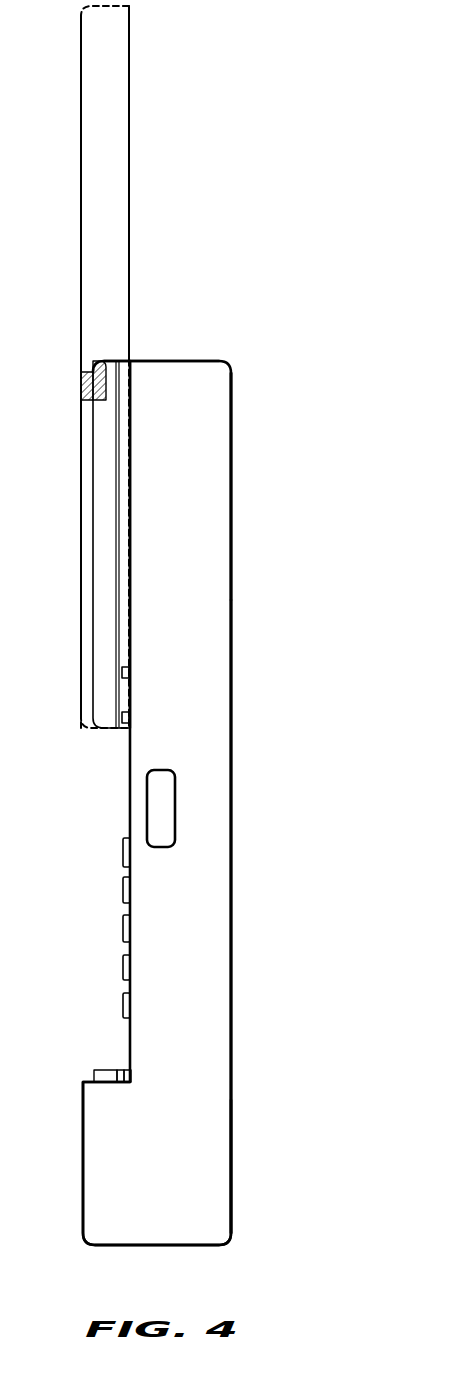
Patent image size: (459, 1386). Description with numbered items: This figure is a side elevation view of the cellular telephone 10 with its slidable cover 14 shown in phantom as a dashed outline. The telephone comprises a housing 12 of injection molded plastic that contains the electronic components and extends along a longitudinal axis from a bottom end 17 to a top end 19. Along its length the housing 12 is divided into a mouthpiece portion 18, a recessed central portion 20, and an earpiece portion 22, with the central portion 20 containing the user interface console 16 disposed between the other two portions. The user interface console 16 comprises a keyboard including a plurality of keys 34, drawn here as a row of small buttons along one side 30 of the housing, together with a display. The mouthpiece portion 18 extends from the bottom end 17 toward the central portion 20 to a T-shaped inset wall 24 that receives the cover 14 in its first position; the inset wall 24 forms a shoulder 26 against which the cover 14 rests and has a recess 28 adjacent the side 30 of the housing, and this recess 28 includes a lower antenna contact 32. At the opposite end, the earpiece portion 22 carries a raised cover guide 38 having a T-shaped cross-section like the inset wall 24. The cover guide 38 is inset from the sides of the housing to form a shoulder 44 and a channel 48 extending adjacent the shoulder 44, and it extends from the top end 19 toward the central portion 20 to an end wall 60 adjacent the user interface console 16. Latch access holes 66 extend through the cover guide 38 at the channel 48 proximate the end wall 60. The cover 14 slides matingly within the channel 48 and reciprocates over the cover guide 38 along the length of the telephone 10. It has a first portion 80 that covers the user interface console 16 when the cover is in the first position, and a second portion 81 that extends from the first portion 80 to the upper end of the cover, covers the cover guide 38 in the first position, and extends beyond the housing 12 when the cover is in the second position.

The cellular telephone 10 is at (186, 311).
The housing 12 is at (233, 573).
The slidable cover 14 is at (79, 161).
The user interface console 16 is at (123, 867).
The bottom end 17 is at (162, 1246).
The mouthpiece portion 18 is at (92, 1193).
The top end 19 is at (182, 360).
The recessed central portion 20 is at (212, 967).
The earpiece portion 22 is at (232, 442).
The inset wall 24 is at (105, 1070).
The shoulder 26 is at (103, 1083).
The recess 28 is at (132, 1072).
The side 30 is at (205, 897).
The lower antenna contact 32 is at (124, 1084).
The keys 34 is at (123, 1005).
The cover guide 38 is at (103, 420).
The shoulder 44 is at (130, 558).
The channel 48 is at (118, 468).
The end wall 60 is at (110, 730).
The latch access holes 66 is at (129, 672).
The first portion 80 is at (80, 510).
The second portion 81 is at (129, 115).